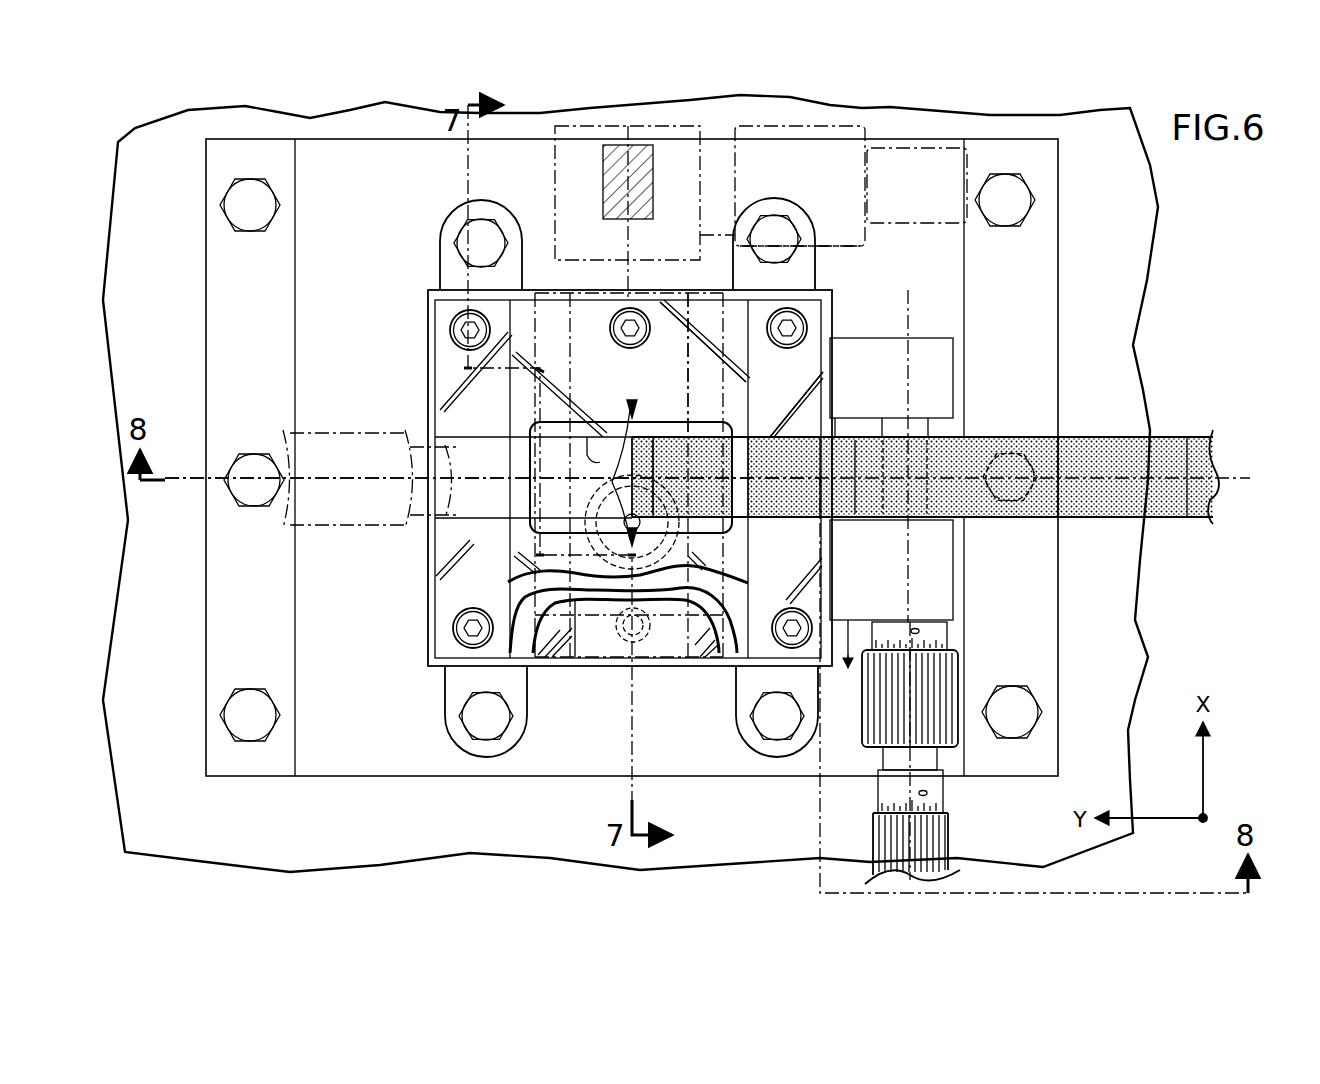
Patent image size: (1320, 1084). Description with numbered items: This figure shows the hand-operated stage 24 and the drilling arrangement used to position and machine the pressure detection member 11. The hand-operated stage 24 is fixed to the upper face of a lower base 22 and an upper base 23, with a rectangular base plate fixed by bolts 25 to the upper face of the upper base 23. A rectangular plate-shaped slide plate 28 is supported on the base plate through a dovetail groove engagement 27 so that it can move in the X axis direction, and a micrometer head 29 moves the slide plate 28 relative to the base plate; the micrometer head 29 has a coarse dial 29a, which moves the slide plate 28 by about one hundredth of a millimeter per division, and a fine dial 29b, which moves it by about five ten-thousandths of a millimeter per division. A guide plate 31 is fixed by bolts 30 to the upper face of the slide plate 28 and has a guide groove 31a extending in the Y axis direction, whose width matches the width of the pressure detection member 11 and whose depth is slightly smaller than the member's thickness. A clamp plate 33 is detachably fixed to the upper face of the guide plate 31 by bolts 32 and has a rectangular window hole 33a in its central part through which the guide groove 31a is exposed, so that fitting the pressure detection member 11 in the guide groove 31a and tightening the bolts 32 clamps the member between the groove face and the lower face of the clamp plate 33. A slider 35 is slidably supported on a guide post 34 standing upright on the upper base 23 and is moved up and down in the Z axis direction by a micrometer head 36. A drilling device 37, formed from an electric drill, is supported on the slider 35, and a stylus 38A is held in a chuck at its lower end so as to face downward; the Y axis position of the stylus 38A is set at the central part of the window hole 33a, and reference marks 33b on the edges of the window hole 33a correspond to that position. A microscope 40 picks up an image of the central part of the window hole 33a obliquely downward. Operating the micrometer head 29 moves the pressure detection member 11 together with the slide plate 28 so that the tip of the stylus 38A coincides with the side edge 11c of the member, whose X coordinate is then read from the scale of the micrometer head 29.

The pressure detection member 11 is at (1087, 434).
The side edge 11c is at (1085, 518).
The lower base 22 is at (1120, 213).
The upper base 23 is at (1025, 280).
The hand-operated stage 24 is at (416, 601).
The bolts 25 is at (465, 240).
The dovetail groove engagement 27 is at (575, 638).
The slide plate 28 is at (428, 367).
The micrometer head 29 is at (955, 790).
The coarse dial 29a is at (945, 685).
The fine dial 29b is at (945, 837).
The bolts 30 is at (460, 333).
The guide plate 31 is at (830, 360).
The guide groove 31a is at (590, 440).
The bolts 32 is at (623, 318).
The clamp plate 33 is at (750, 388).
The window hole 33a is at (672, 425).
The reference marks 33b is at (612, 482).
The guide post 34 is at (605, 185).
The slider 35 is at (703, 190).
The micrometer head 36 is at (893, 228).
The drilling device 37 is at (555, 478).
The stylus 38A is at (628, 566).
The microscope 40 is at (350, 526).